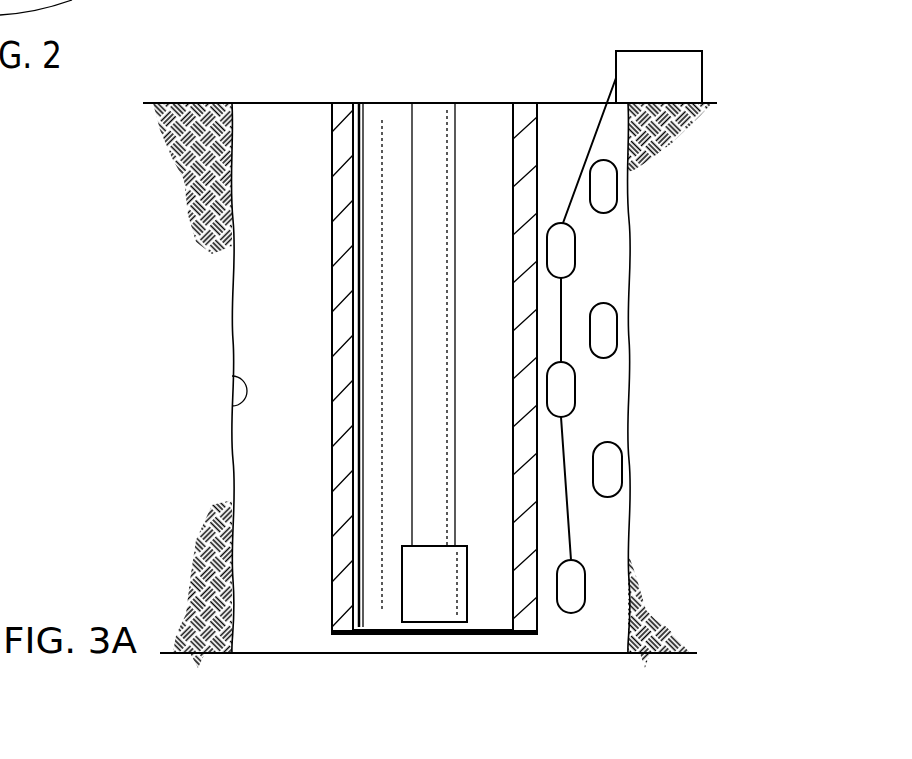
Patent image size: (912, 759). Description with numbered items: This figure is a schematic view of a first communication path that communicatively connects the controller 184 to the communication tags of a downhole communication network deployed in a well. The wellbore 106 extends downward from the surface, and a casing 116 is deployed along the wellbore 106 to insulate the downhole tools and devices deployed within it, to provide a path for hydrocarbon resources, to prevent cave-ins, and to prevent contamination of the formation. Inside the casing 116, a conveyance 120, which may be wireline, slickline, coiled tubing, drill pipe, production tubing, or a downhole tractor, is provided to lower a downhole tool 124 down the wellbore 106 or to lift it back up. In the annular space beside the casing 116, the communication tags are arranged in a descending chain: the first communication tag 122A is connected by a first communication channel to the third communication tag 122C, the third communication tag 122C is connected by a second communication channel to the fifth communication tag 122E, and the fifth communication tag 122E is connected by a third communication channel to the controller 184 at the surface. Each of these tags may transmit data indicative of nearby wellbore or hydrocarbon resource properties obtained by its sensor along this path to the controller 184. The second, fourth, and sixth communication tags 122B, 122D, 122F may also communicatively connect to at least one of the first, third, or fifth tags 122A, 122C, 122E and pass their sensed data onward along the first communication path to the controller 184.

The wellbore 106 is at (232, 378).
The casing 116 is at (340, 145).
The conveyance 120 is at (407, 118).
The first communication tag 122A is at (585, 582).
The second communication tag 122B is at (622, 468).
The third communication tag 122C is at (575, 388).
The fourth communication tag 122D is at (617, 332).
The fifth communication tag 122E is at (575, 252).
The sixth communication tag 122F is at (617, 190).
The downhole tool 124 is at (467, 556).
The controller 184 is at (658, 50).